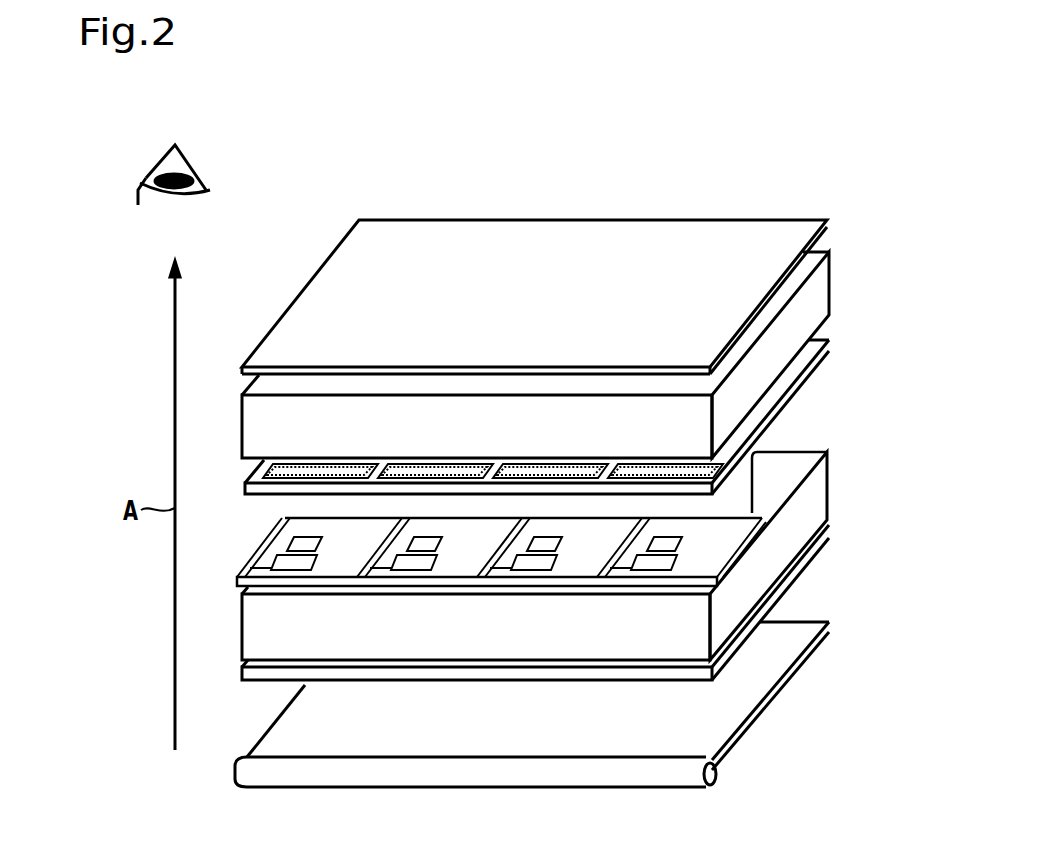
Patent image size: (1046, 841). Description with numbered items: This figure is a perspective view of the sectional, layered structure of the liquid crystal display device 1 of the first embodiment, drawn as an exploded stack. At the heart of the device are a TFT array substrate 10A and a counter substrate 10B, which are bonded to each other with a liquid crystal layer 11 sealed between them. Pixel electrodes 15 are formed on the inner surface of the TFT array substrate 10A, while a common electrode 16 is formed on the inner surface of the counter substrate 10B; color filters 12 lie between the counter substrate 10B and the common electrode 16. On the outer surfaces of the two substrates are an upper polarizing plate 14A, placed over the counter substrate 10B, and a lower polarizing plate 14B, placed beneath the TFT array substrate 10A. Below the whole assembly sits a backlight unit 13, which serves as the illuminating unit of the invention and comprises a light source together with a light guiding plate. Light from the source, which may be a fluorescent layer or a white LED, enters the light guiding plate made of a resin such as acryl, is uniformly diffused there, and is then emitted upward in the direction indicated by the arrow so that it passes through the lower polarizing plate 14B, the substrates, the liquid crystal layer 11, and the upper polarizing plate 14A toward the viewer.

The liquid crystal display device 1 is at (900, 152).
The upper polarizing plate 14A is at (828, 224).
The counter substrate 10B is at (768, 362).
The common electrode 16 is at (783, 408).
The liquid crystal layer 11 is at (753, 487).
The TFT array substrate 10A is at (797, 537).
The color filters 12 is at (708, 548).
The pixel electrodes 15 is at (768, 610).
The lower polarizing plate 14B is at (738, 645).
The backlight unit 13 is at (745, 742).